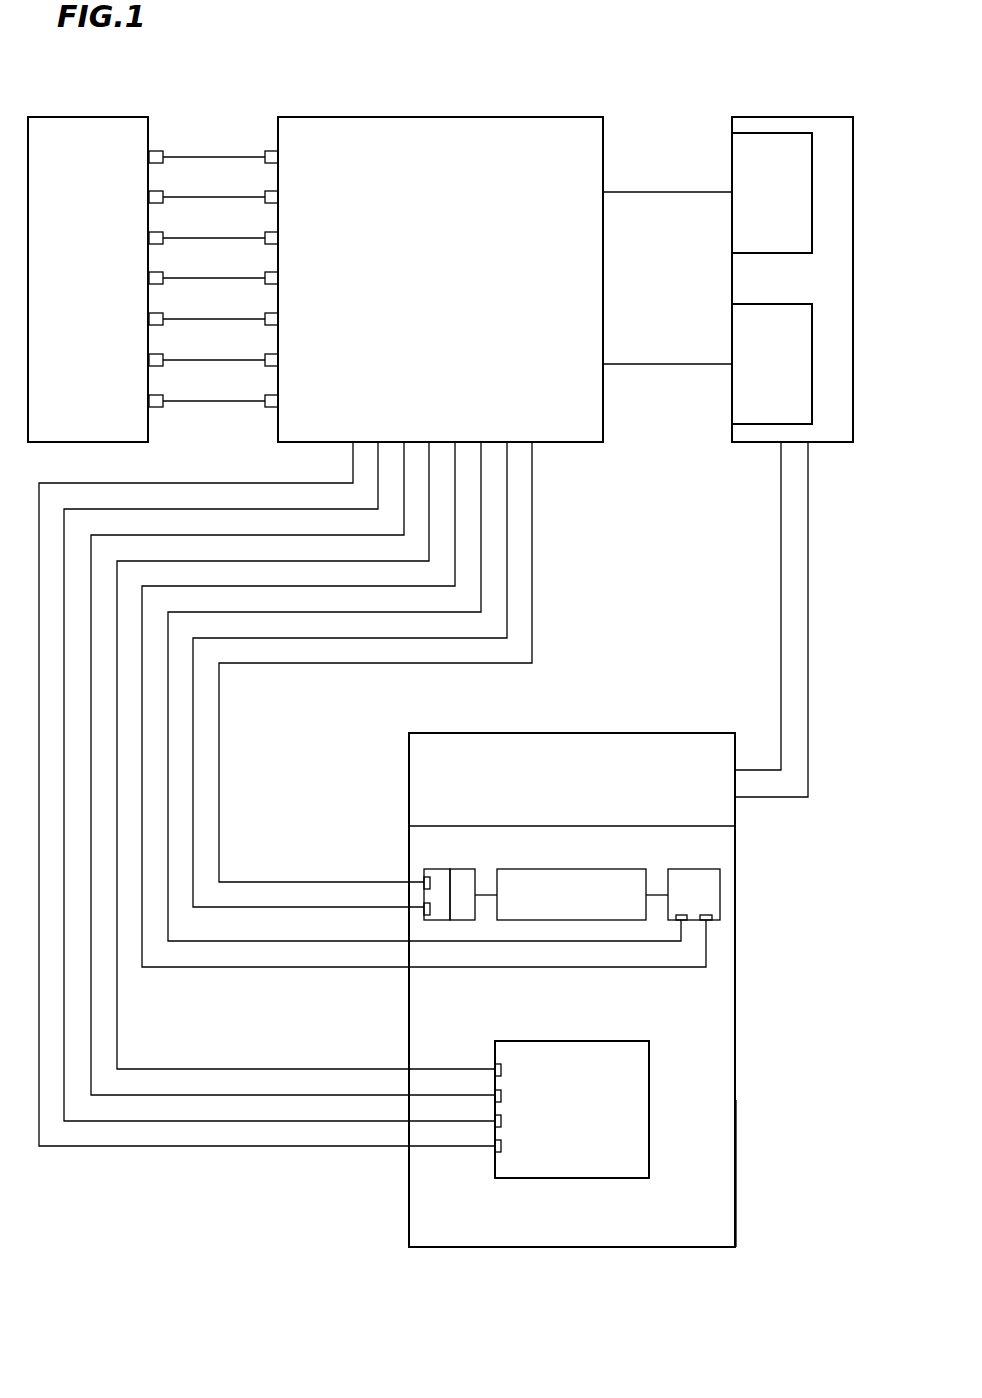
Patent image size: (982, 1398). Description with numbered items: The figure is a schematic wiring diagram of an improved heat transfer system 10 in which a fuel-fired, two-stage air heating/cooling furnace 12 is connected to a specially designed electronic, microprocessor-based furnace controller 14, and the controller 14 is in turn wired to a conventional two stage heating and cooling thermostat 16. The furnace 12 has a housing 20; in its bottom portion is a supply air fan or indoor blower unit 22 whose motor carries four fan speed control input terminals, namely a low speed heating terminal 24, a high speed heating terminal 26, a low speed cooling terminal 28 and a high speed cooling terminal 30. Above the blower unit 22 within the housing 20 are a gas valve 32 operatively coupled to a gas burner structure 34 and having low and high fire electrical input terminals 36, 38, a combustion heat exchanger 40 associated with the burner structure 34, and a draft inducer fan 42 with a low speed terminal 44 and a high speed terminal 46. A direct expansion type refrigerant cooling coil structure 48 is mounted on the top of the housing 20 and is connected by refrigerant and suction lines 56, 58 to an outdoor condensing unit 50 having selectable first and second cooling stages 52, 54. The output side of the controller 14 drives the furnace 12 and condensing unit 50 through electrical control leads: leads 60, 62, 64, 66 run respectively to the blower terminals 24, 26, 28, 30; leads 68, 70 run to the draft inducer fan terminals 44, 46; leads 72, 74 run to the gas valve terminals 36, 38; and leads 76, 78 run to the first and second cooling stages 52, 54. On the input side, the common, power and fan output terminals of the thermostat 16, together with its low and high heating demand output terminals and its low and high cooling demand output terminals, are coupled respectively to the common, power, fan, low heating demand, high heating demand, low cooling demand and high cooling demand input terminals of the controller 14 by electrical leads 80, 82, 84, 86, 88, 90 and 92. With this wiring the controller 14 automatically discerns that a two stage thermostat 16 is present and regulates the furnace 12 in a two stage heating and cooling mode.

The heat transfer system 10 is at (259, 1246).
The furnace 12 is at (745, 1094).
The furnace controller 14 is at (440, 116).
The two stage heating and cooling thermostat 16 is at (82, 114).
The housing 20 is at (738, 1184).
The indoor blower unit 22 is at (598, 1179).
The low speed heating terminal 24 is at (502, 1146).
The high speed heating terminal 26 is at (502, 1121).
The low speed cooling terminal 28 is at (502, 1096).
The high speed cooling terminal 30 is at (502, 1070).
The gas valve 32 is at (452, 886).
The gas burner structure 34 is at (476, 878).
The low fire electrical input terminal 36 is at (426, 914).
The high fire electrical input terminal 38 is at (426, 872).
The combustion heat exchanger 40 is at (582, 894).
The draft inducer fan 42 is at (696, 869).
The low speed terminal 44 is at (707, 914).
The high speed terminal 46 is at (682, 914).
The refrigerant cooling coil structure 48 is at (697, 732).
The outdoor condensing unit 50 is at (820, 116).
The first cooling stage 52 is at (762, 132).
The second cooling stage 54 is at (768, 426).
The refrigerant line 56 is at (781, 580).
The suction line 58 is at (808, 617).
The electrical control lead 60 is at (147, 1148).
The electrical control lead 62 is at (240, 1122).
The electrical control lead 64 is at (270, 1094).
The electrical control lead 66 is at (182, 1068).
The electrical control lead 68 is at (228, 968).
The electrical control lead 70 is at (318, 942).
The electrical control lead 72 is at (302, 906).
The electrical control lead 74 is at (277, 881).
The electrical control lead 76 is at (688, 190).
The electrical control lead 78 is at (678, 362).
The electrical lead 80 is at (193, 156).
The electrical lead 82 is at (197, 196).
The electrical lead 84 is at (195, 237).
The electrical lead 86 is at (200, 277).
The electrical lead 88 is at (200, 318).
The electrical lead 90 is at (205, 359).
The electrical lead 92 is at (232, 403).